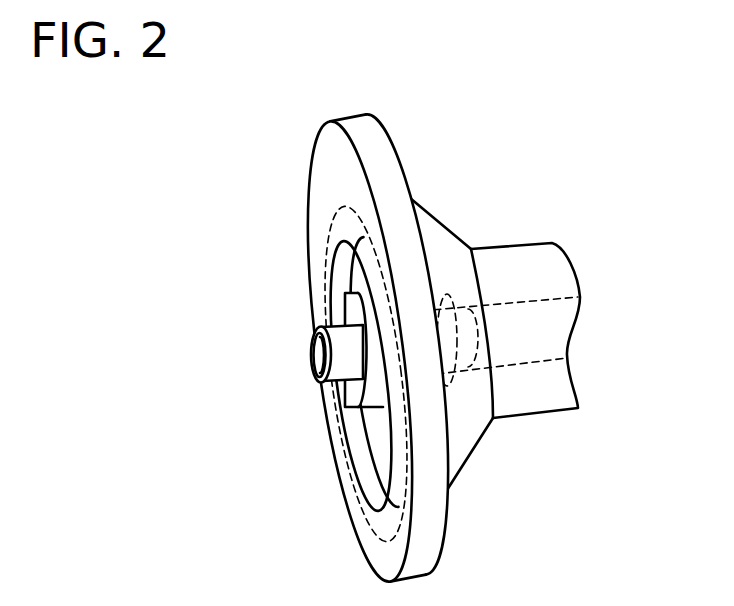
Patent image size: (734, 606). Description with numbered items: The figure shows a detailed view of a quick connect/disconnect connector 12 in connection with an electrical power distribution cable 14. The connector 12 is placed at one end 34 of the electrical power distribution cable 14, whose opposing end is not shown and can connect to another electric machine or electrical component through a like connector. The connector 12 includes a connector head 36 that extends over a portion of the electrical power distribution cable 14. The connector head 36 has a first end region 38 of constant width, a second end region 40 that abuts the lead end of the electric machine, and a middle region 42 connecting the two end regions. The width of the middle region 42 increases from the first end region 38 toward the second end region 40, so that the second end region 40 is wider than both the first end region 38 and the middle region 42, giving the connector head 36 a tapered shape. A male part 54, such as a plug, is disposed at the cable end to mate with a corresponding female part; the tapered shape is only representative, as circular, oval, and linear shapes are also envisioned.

The connector 12 is at (288, 127).
The electrical power distribution cable 14 is at (528, 352).
The end of the electrical power distribution cable 34 is at (330, 378).
The connector head 36 is at (486, 486).
The first end region 38 is at (500, 266).
The second end region 40 is at (368, 131).
The middle region 42 is at (444, 220).
The male part 54 is at (318, 326).